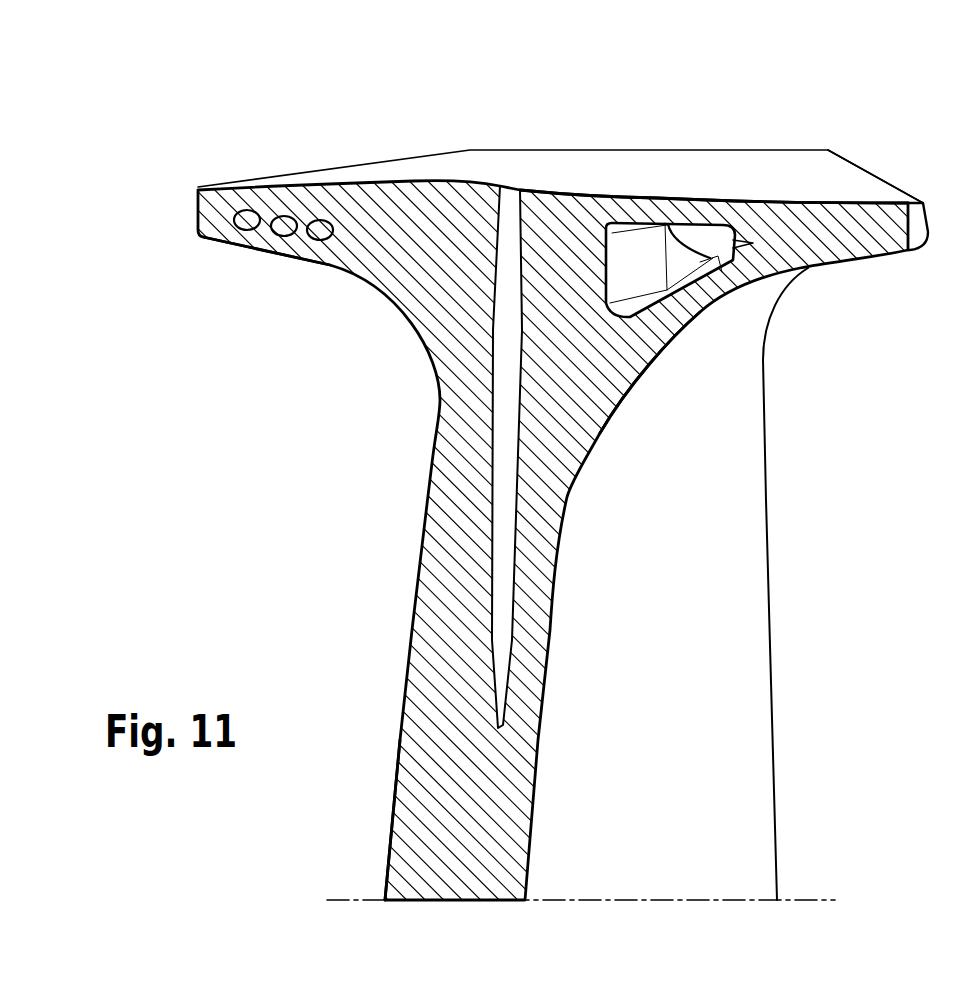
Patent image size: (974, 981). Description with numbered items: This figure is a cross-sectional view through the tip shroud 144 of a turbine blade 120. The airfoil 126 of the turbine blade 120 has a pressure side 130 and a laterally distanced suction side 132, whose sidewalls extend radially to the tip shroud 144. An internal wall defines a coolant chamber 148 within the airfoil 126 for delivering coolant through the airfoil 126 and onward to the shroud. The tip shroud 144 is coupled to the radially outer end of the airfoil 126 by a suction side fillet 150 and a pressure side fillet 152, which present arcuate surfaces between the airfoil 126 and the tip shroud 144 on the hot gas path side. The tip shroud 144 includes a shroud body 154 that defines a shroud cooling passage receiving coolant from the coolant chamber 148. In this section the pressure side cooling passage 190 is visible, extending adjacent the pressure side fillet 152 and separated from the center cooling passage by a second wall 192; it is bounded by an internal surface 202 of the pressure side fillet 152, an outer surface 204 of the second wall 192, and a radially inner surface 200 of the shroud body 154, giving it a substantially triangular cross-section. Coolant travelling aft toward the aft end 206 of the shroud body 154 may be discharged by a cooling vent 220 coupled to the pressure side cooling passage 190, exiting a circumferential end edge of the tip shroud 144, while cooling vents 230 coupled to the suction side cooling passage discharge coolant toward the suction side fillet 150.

The turbine blade 120 is at (780, 83).
The airfoil 126 is at (767, 525).
The pressure side 130 is at (620, 860).
The suction side 132 is at (397, 790).
The tip shroud 144 is at (900, 177).
The coolant chamber 148 is at (507, 457).
The suction side fillet 150 is at (430, 270).
The pressure side fillet 152 is at (633, 360).
The shroud body 154 is at (807, 177).
The pressure side cooling passage 190 is at (657, 222).
The second wall 192 is at (627, 263).
The radially inner surface 200 is at (690, 240).
The internal surface 202 is at (677, 297).
The outer surface 204 is at (605, 272).
The aft end 206 is at (883, 177).
The cooling vent 220 is at (713, 245).
The cooling vent 230 is at (315, 225).